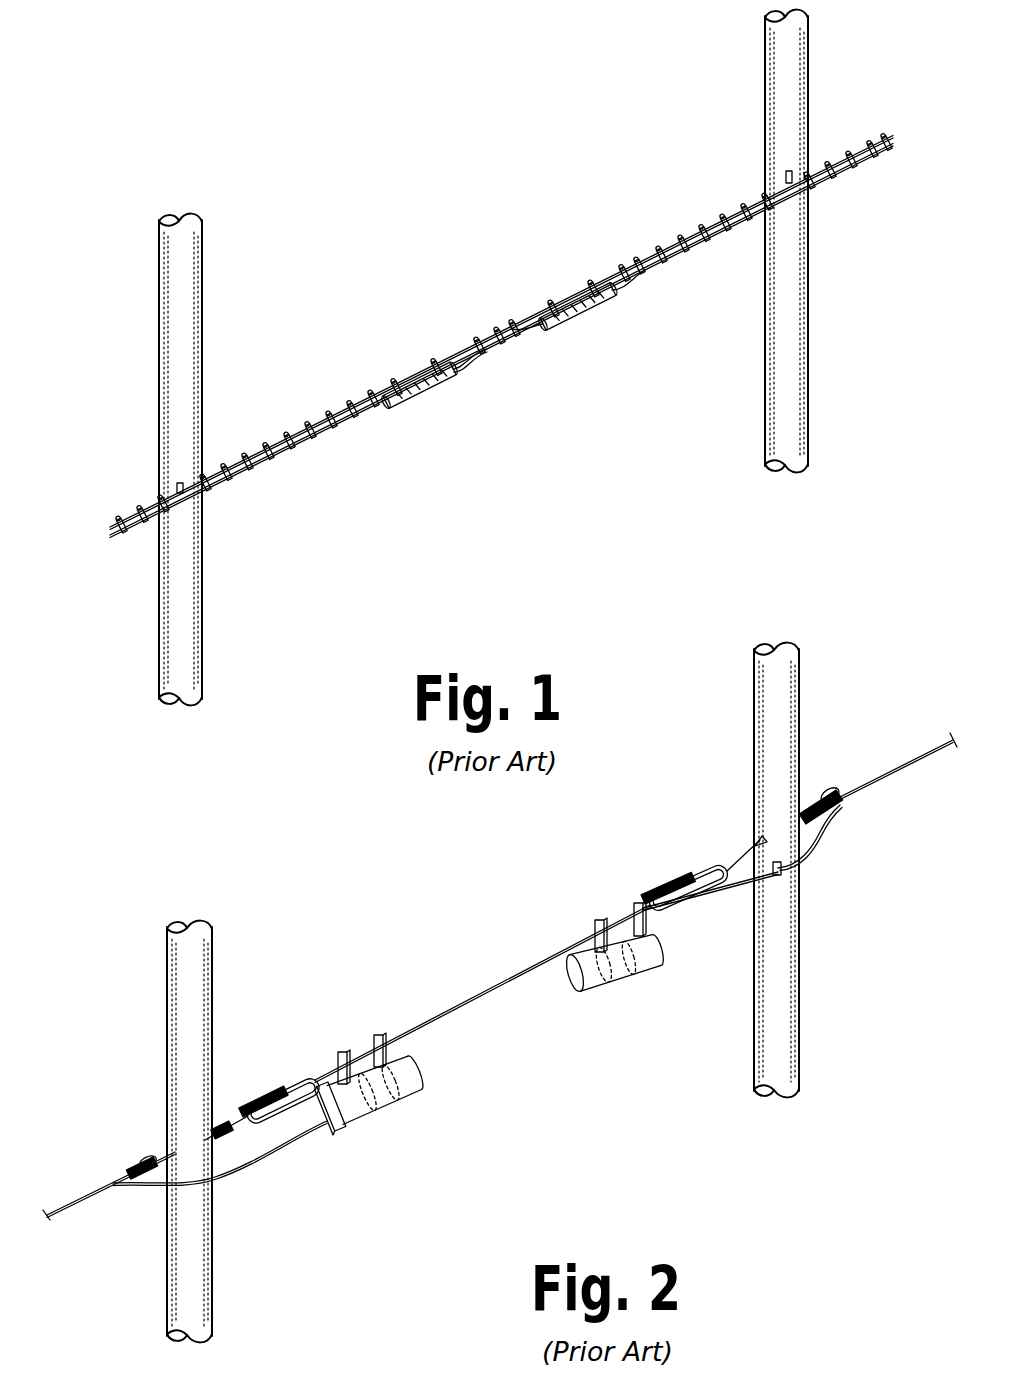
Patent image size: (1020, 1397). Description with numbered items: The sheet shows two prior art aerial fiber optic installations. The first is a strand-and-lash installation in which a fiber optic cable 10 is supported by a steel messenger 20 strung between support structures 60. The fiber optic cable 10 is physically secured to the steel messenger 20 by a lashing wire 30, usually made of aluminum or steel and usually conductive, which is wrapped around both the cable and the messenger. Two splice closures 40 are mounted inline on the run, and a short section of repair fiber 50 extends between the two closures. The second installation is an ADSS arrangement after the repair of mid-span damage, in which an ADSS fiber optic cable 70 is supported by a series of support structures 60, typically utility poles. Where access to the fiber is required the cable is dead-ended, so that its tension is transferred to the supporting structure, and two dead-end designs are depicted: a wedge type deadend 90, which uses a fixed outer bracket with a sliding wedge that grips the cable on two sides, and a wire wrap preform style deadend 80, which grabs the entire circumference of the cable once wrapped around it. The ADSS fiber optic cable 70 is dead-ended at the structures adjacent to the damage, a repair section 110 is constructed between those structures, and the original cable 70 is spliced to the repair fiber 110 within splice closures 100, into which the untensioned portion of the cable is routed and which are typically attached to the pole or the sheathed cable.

In FIG. 1, the fiber optic cable 10 is at (613, 287).
In FIG. 1, the steel messenger 20 is at (570, 288).
In FIG. 1, the lashing wire 30 is at (643, 263).
In FIG. 1, the splice closures 40 is at (428, 390).
In FIG. 1, the repair fiber 50 is at (467, 363).
In FIG. 1, the support structures 60 is at (197, 275).
In FIG. 2, the support structures 60 is at (200, 962).
In FIG. 2, the ADSS fiber optic cable 70 is at (50, 1207).
In FIG. 2, the wire wrap preform style deadend 80 is at (840, 793).
In FIG. 2, the wedge type deadend 90 is at (278, 1085).
In FIG. 2, the splice closure 100 is at (367, 1107).
In FIG. 2, the repair section 110 is at (461, 1000).